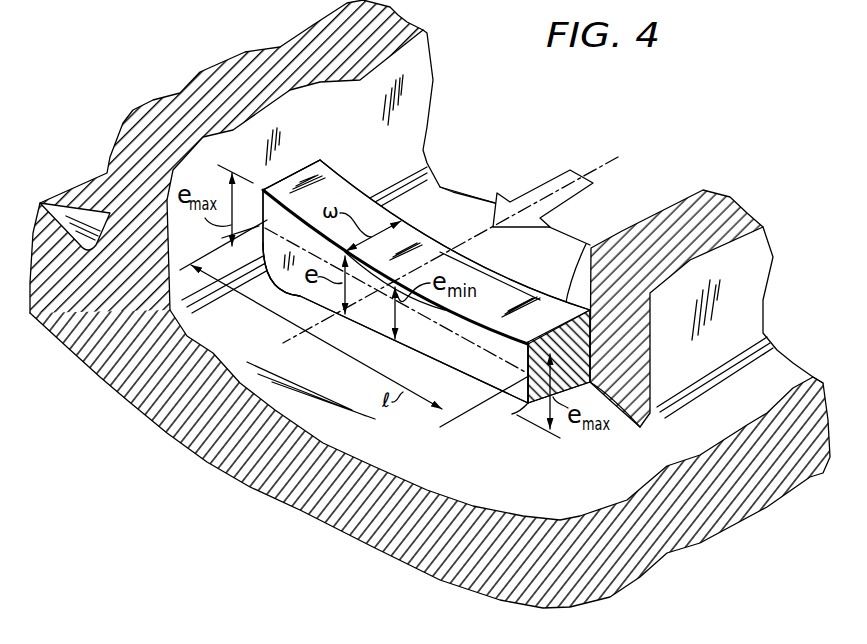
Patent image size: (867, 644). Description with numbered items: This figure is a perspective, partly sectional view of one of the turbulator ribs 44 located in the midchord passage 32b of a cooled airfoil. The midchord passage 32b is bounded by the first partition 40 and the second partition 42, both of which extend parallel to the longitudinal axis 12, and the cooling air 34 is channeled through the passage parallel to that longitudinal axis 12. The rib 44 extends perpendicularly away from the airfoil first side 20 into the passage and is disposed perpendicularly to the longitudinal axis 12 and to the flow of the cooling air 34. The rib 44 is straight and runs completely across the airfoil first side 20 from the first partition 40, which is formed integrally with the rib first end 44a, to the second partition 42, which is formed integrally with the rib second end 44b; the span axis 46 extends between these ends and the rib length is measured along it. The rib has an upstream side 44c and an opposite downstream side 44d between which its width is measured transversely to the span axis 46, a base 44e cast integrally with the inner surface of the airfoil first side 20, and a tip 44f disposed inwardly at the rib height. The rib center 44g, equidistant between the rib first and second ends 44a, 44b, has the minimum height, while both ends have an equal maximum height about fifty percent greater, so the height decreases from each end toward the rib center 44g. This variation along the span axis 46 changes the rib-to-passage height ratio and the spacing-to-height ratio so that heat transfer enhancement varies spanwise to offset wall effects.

The airfoil first side 20 is at (212, 462).
The first partition 40 is at (228, 63).
The second partition 42 is at (670, 207).
The longitudinal axis 12 is at (611, 160).
The cooling air 34 is at (540, 186).
The midchord passage 32b is at (453, 213).
The turbulator rib 44 is at (537, 287).
The rib first end 44a is at (319, 160).
The rib second end 44b is at (624, 418).
The upstream side 44c is at (584, 262).
The downstream side 44d is at (510, 402).
The base 44e is at (308, 294).
The tip 44f is at (362, 203).
The rib center 44g is at (468, 250).
The span axis 46 is at (463, 342).